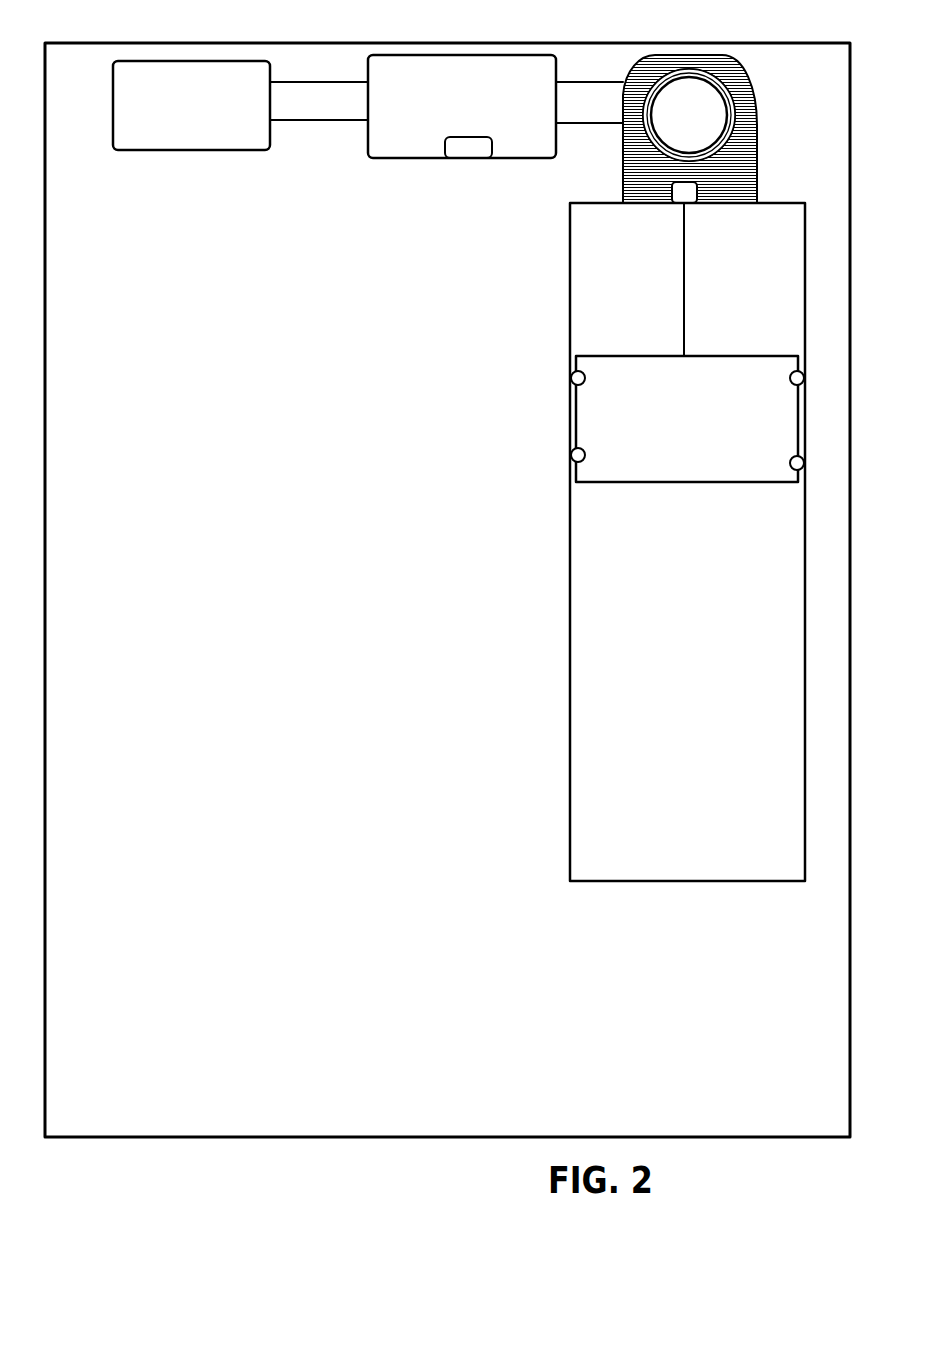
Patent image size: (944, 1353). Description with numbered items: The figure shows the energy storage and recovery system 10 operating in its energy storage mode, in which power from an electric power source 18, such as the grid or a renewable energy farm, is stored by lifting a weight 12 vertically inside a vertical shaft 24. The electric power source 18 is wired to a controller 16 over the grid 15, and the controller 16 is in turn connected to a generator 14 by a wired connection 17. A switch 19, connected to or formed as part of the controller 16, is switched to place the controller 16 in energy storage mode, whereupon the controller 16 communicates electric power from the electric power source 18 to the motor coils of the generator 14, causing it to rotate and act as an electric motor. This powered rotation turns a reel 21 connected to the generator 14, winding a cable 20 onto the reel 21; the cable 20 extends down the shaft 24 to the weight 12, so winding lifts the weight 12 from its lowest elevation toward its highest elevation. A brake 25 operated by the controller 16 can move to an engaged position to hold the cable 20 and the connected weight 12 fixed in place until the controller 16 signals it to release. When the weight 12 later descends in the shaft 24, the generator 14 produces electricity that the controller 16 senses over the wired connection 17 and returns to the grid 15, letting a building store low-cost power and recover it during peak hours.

The system 10 is at (405, 233).
The weight 12 is at (584, 418).
The generator 14 is at (752, 173).
The grid 15 is at (293, 121).
The controller 16 is at (418, 158).
The wired connection 17 is at (578, 124).
The electric power source 18 is at (183, 151).
The switch 19 is at (470, 153).
The cable 20 is at (687, 272).
The reel 21 is at (646, 113).
The vertical shaft 24 is at (613, 660).
The brake 25 is at (674, 198).